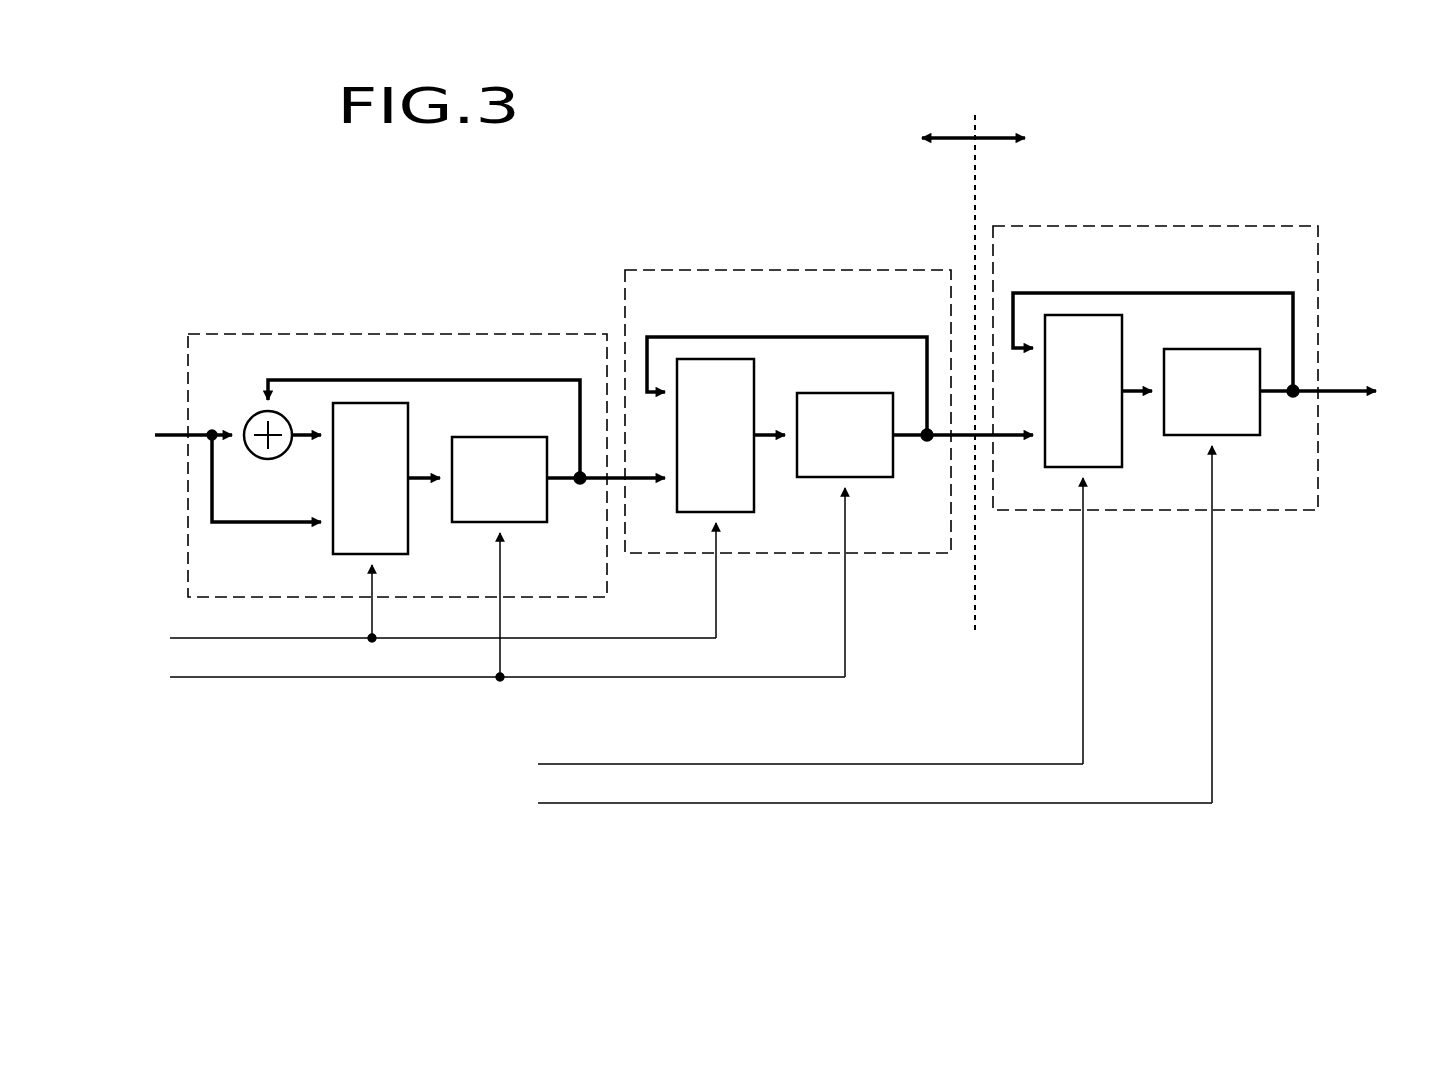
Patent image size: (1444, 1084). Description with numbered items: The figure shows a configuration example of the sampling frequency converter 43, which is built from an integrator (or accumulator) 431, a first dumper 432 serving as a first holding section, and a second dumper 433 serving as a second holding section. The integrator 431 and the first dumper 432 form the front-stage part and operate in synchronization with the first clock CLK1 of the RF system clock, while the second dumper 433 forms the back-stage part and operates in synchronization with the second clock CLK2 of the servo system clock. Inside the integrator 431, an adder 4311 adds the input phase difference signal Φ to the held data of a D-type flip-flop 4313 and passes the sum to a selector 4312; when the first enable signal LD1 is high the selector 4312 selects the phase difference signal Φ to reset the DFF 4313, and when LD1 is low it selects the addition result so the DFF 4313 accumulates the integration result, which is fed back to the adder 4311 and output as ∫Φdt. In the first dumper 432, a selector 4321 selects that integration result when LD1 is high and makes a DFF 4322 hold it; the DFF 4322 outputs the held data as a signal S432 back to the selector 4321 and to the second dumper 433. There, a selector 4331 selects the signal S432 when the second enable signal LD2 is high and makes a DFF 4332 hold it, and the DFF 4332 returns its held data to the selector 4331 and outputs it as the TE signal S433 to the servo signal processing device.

The sampling frequency converter 43 is at (772, 67).
The integrator (or accumulator) 431 is at (395, 334).
The adder 4311 is at (268, 459).
The selector 4312 is at (408, 408).
The D-type flip-flop (DFF) 4313 is at (527, 437).
The first dumper 432 is at (780, 270).
The selector 4321 is at (754, 365).
The DFF 4322 is at (870, 393).
The signal S432 is at (940, 442).
The second dumper 433 is at (1258, 226).
The selector 4331 is at (1122, 321).
The DFF 4332 is at (1238, 349).
The TE signal S433 is at (1350, 396).